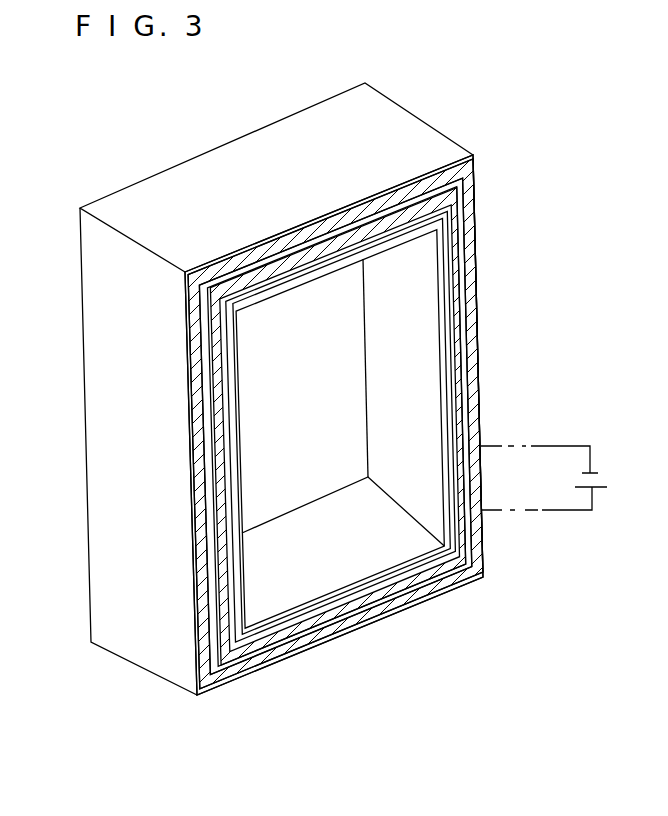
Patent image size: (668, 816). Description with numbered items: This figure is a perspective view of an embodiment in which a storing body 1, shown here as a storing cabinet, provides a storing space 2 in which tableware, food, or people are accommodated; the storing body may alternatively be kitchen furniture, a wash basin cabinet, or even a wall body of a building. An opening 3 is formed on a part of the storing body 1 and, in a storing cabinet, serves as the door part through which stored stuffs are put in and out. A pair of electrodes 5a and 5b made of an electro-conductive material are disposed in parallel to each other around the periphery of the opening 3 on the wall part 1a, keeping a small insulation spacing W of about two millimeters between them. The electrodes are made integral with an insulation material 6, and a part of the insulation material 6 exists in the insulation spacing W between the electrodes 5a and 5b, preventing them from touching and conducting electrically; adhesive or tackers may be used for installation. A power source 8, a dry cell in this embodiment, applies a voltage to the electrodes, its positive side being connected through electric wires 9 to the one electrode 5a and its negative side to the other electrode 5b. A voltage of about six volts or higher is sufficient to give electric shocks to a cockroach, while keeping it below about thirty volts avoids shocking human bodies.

The storing body 1 is at (407, 105).
The wall part 1a is at (193, 660).
The storing space 2 is at (282, 557).
The opening 3 is at (425, 360).
The electrode 5a is at (468, 203).
The electrode 5b is at (455, 277).
The insulation spacing W is at (457, 242).
The insulation material 6 is at (271, 286).
The power source 8 is at (607, 473).
The electric wires 9 is at (542, 523).